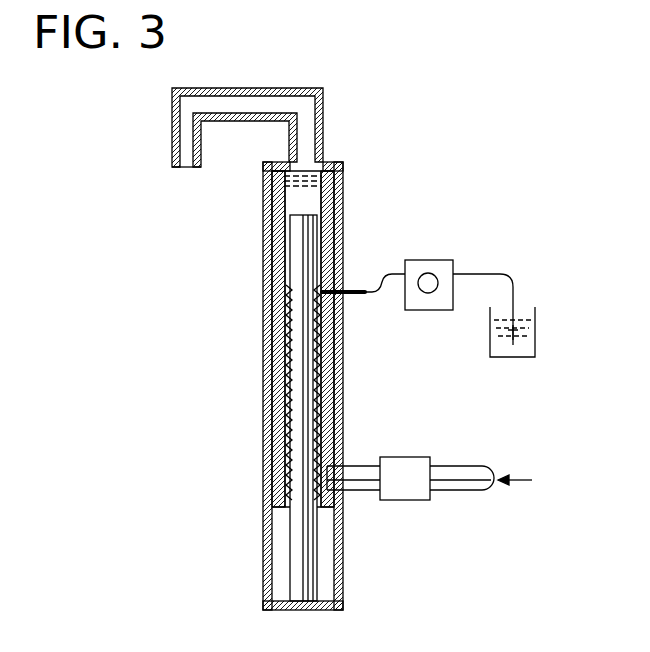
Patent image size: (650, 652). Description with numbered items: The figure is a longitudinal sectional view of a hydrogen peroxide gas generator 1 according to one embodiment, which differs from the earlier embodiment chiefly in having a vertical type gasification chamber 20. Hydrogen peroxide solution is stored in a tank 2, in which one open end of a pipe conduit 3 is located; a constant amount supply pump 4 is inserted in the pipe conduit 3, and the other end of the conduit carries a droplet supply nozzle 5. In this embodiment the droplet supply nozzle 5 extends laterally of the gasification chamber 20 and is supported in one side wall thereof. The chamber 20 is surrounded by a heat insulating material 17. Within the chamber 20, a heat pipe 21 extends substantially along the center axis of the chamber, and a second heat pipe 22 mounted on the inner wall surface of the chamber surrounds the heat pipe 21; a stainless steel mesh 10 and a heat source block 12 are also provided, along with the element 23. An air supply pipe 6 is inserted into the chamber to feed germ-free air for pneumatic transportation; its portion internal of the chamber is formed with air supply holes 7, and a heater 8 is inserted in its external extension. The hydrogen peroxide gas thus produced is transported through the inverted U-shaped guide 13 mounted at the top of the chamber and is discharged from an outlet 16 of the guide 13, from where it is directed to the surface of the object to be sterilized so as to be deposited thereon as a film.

The hydrogen peroxide gas generator 1 is at (403, 178).
The tank 2 is at (536, 331).
The pipe conduit 3 is at (496, 272).
The constant amount supply pump 4 is at (436, 261).
The droplet supply nozzle 5 is at (362, 295).
The air supply pipe 6 is at (452, 472).
The air supply holes 7 is at (331, 468).
The heater 8 is at (396, 468).
The stainless steel mesh 10 is at (337, 370).
The heat source block 12 is at (291, 88).
The inverted U-shaped guide 13 is at (305, 127).
The outlet 16 is at (188, 163).
The heat insulating material 17 is at (270, 326).
The vertical type gasification chamber 20 is at (268, 541).
The heat pipe 21 is at (300, 430).
The second heat pipe 22 is at (275, 242).
The heating coil 23 is at (290, 372).